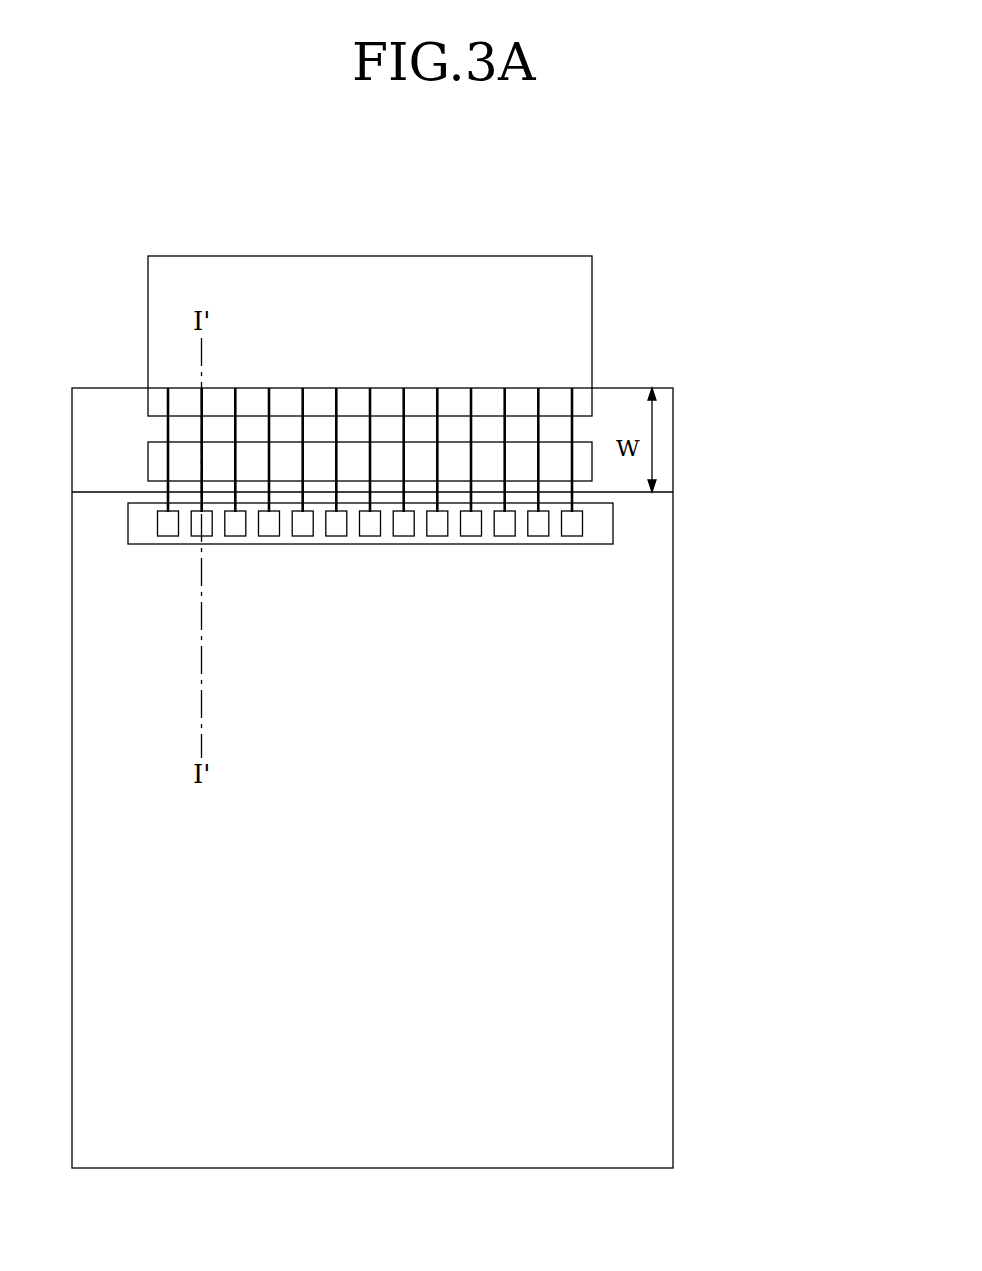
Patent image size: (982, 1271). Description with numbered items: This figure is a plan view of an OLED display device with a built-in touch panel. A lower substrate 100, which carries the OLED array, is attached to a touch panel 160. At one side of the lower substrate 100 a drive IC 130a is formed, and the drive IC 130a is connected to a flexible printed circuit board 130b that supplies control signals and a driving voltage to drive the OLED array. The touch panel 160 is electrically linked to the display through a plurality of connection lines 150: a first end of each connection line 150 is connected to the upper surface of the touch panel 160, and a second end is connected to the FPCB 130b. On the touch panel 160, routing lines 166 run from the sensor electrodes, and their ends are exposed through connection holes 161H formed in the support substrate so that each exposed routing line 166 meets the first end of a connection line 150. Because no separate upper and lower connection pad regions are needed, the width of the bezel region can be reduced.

The lower substrate 100 is at (673, 445).
The drive IC 130a is at (592, 447).
The flexible printed circuit board (FPCB) 130b is at (592, 283).
The connection line 150 is at (573, 485).
The touch panel 160 is at (673, 838).
The connection holes 161H is at (583, 524).
The routing lines 166 is at (573, 545).